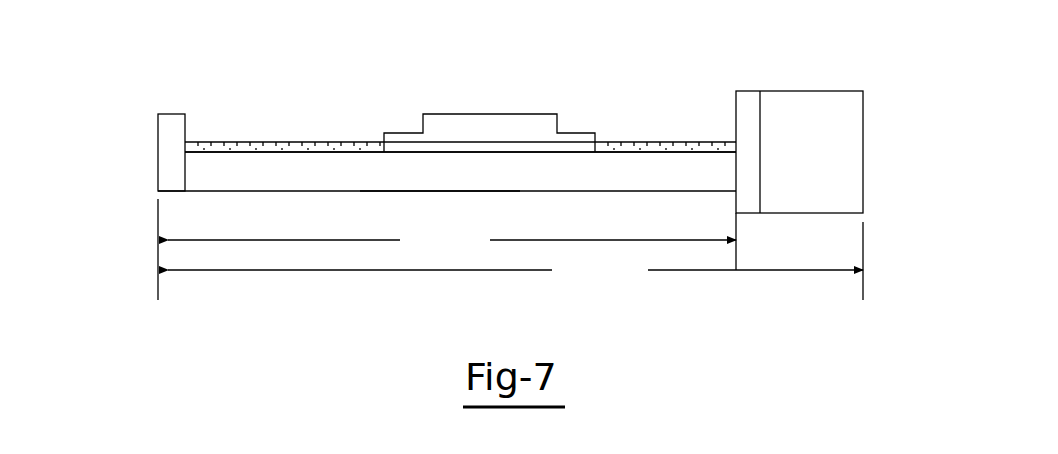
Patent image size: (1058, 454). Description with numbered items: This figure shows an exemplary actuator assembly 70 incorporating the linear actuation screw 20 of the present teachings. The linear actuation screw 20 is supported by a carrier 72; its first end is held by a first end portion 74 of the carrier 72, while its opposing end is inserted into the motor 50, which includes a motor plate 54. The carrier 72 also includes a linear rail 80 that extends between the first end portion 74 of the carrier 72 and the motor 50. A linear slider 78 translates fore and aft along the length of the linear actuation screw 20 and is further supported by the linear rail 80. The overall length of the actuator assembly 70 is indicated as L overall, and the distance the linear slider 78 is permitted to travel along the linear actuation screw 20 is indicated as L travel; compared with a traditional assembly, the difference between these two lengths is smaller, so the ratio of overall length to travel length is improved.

The actuator assembly 70 is at (498, 161).
The carrier 72 is at (250, 192).
The first end portion of the carrier 74 is at (164, 128).
The linear actuation screw 20 is at (316, 141).
The linear slider 78 is at (493, 130).
The linear rail 80 is at (368, 192).
The motor 50 is at (821, 104).
The motor plate 54 is at (750, 103).